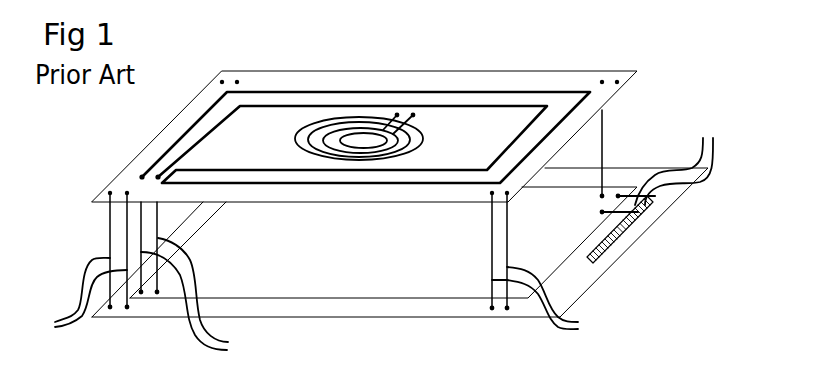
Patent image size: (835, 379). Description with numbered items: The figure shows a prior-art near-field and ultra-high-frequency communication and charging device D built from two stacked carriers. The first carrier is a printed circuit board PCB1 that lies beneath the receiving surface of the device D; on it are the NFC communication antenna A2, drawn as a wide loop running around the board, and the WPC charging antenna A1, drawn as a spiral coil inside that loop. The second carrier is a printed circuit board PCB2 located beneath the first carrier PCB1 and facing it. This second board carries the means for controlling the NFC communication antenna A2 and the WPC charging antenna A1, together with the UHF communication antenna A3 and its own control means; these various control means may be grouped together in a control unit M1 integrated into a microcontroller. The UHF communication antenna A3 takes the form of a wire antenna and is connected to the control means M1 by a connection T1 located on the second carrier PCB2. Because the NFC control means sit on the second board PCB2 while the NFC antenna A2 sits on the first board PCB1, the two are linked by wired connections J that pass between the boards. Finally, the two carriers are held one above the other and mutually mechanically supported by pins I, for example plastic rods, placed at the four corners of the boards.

The WPC charging antenna A1 is at (363, 116).
The NFC communication antenna A2 is at (468, 90).
The UHF communication antenna A3 is at (605, 253).
The first carrier printed circuit board PCB1 is at (617, 64).
The second carrier printed circuit board PCB2 is at (660, 230).
The charging device D is at (710, 82).
The connection T1 is at (677, 158).
The pins I is at (317, 299).
The wired connections J is at (194, 299).
The control unit M1 is at (360, 292).